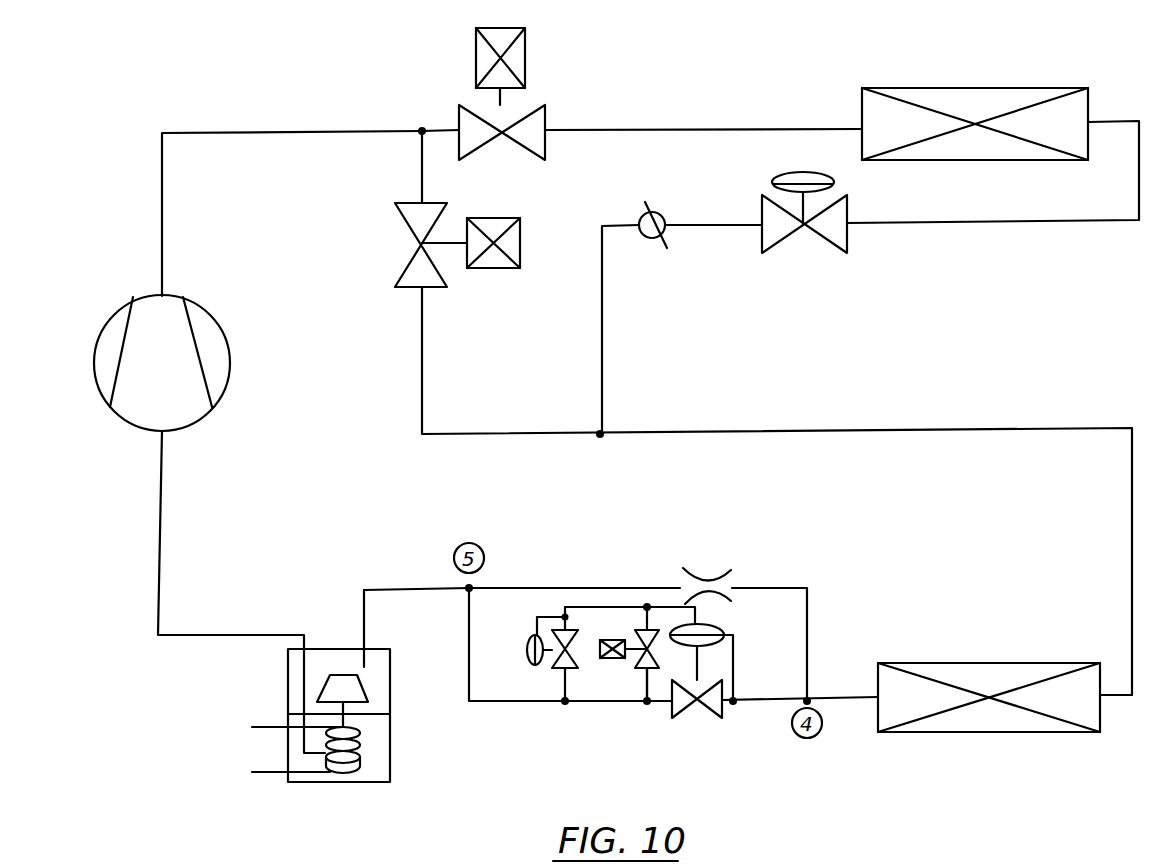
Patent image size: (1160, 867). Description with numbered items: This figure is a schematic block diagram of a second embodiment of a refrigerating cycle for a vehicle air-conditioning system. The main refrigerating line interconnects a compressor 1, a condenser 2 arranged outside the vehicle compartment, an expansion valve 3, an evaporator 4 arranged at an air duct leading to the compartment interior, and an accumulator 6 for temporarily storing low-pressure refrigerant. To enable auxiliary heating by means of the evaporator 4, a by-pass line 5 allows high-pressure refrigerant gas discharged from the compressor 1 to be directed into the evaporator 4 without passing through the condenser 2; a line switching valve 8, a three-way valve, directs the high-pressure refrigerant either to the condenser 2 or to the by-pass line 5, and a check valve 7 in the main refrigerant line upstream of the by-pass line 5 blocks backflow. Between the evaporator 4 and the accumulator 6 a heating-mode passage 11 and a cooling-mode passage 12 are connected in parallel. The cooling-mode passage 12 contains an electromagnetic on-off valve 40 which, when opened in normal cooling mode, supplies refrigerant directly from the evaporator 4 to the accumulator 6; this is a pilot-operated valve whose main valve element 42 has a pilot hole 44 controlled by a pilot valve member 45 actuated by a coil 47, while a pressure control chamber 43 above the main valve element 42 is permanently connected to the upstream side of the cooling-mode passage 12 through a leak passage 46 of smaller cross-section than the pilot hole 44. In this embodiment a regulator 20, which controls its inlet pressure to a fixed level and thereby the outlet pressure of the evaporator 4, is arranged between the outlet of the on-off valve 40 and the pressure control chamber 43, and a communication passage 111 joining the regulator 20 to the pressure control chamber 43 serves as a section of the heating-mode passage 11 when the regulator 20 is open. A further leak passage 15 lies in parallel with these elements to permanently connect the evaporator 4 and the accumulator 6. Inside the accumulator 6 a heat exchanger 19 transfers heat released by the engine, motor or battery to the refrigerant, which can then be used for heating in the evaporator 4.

The compressor 1 is at (215, 318).
The condenser 2 is at (985, 88).
The expansion valve 3 is at (782, 240).
The evaporator 4 is at (1005, 663).
The by-pass line 5 is at (422, 353).
The accumulator 6 is at (288, 682).
The check valve 7 is at (645, 215).
The line switching valve 8 is at (520, 150).
The heating-mode passage 11 is at (535, 588).
The cooling-mode passage 12 is at (612, 705).
The leak passage 15 is at (708, 572).
The heat exchanger 19 is at (362, 753).
The regulator 20 is at (526, 622).
The electromagnetic on-off valve 40 is at (723, 712).
The main valve element 42 is at (710, 708).
The pressure control chamber 43 is at (712, 630).
The pilot hole 44 is at (638, 694).
The pilot valve member 45 is at (650, 630).
The leak passage 46 is at (735, 672).
The coil 47 is at (607, 660).
The communication passage 111 is at (594, 600).